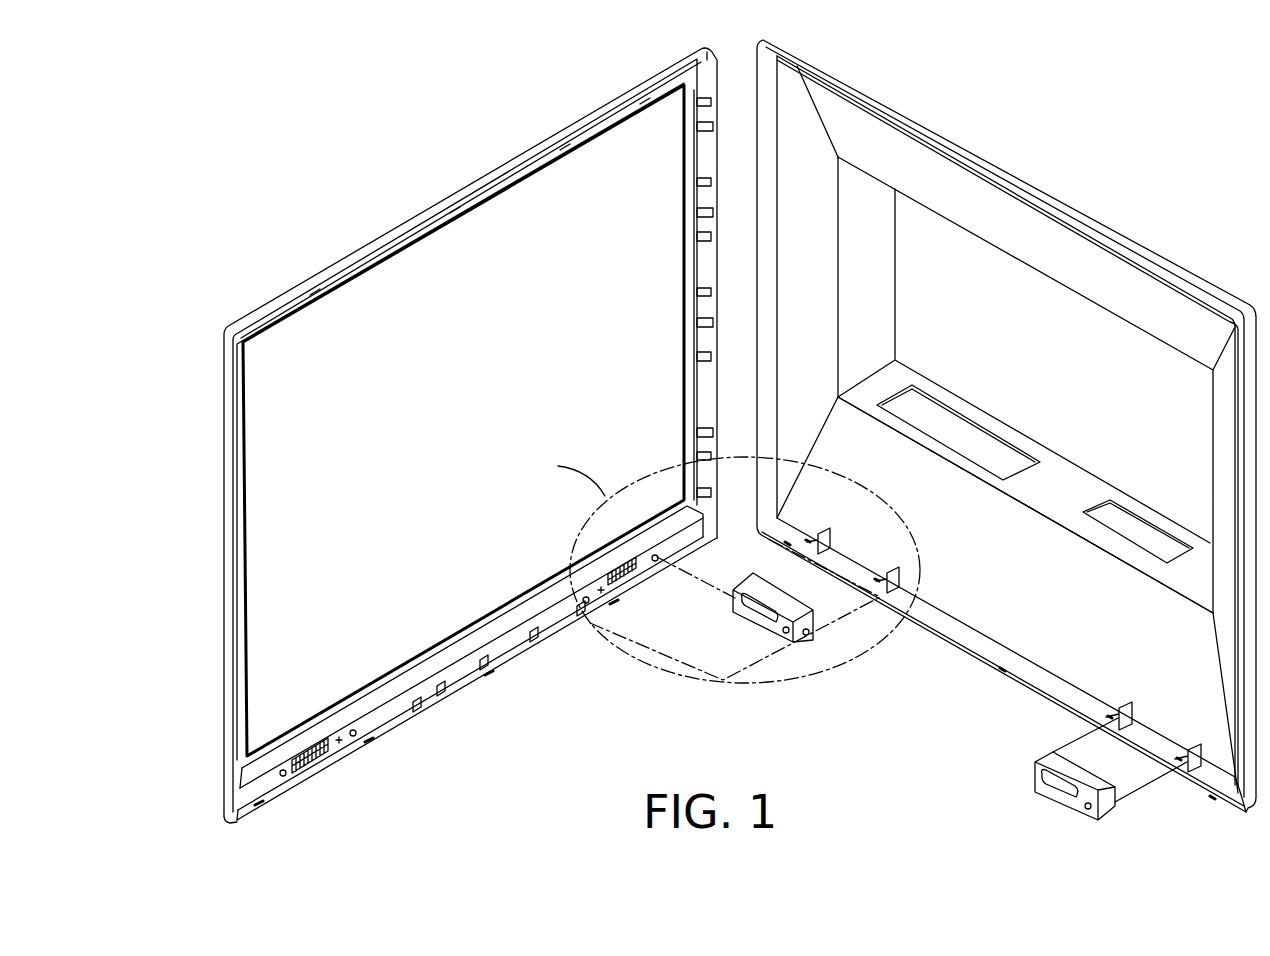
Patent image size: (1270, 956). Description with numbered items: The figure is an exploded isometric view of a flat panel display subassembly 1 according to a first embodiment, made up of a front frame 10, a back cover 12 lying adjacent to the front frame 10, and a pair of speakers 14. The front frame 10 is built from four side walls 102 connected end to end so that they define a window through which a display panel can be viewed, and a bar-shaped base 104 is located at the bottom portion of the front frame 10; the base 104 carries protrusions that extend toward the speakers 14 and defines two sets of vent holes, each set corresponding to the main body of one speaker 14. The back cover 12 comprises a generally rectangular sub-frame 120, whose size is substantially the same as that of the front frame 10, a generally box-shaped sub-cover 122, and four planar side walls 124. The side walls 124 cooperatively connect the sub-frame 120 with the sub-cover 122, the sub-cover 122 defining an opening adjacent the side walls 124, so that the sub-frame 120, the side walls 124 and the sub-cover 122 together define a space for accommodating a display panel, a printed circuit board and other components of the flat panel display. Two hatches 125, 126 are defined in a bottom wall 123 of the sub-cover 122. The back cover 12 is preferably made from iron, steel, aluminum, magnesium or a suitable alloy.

The flat panel display subassembly 1 is at (423, 117).
The front frame 10 is at (314, 266).
The side walls 102 is at (440, 213).
The base 104 is at (385, 697).
The back cover 12 is at (978, 130).
The sub-frame 120 is at (1262, 340).
The sub-cover 122 is at (862, 222).
The bottom wall 123 is at (1062, 490).
The side walls 124 is at (975, 618).
The hatch 125 is at (1122, 528).
The hatch 126 is at (972, 445).
The speakers 14 is at (760, 605).